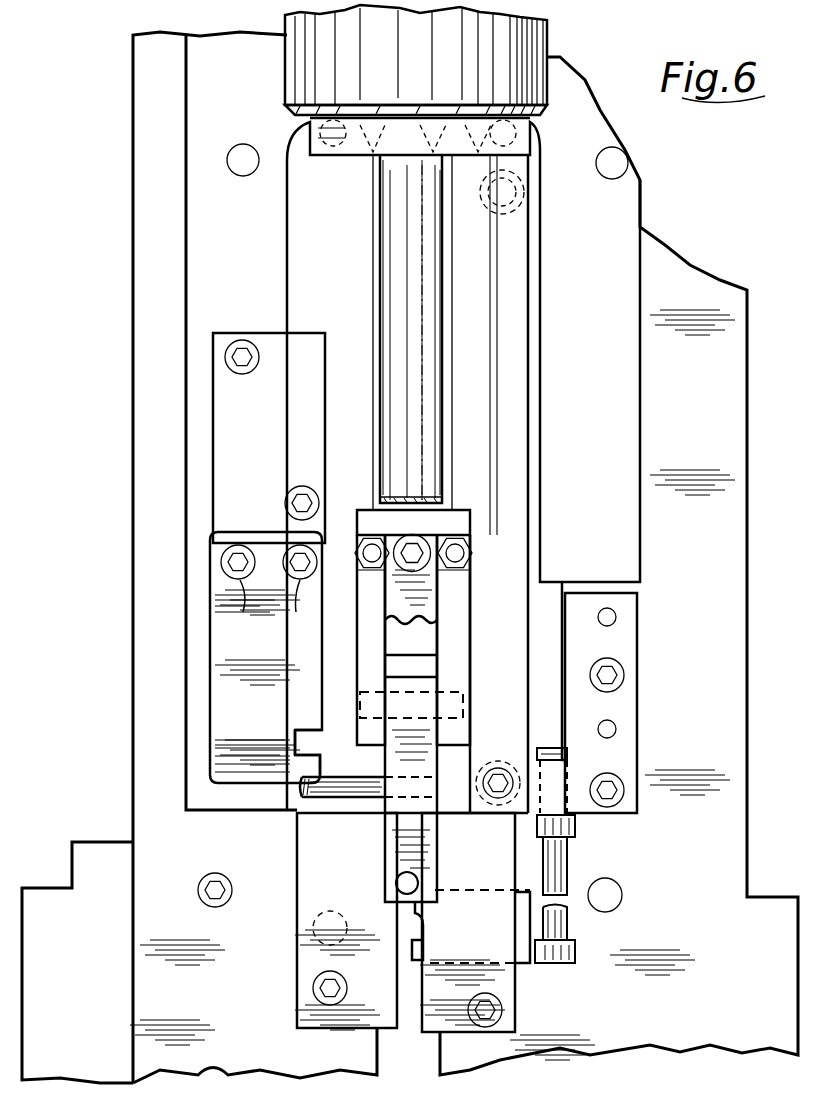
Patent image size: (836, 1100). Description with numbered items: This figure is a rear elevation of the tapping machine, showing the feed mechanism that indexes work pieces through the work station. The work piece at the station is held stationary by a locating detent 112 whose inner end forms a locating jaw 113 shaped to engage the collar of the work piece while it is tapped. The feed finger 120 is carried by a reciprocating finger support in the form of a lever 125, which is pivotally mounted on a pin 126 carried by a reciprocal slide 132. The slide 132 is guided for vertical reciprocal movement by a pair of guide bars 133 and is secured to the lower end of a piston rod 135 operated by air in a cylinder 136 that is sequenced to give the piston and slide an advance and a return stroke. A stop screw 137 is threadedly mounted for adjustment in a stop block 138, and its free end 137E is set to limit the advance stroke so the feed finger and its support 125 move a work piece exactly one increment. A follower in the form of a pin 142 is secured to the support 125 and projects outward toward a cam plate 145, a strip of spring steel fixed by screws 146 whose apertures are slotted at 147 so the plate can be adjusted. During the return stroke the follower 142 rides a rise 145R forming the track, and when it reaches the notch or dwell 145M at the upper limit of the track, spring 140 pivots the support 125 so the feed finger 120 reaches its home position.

The locating detent 112 is at (523, 955).
The locating jaw 113 is at (420, 930).
The feed finger 120 is at (413, 876).
The lever 125 is at (398, 668).
The pin 126 is at (447, 690).
The slide 132 is at (368, 640).
The guide bars 133 is at (505, 480).
The piston rod 135 is at (425, 330).
The cylinder 136 is at (345, 62).
The stop screw 137 is at (557, 858).
The free end 137E is at (567, 752).
The stop block 138 is at (622, 702).
The spring 140 is at (418, 585).
The pin 142 is at (352, 795).
The cam plate 145 is at (240, 767).
The latch plate notch 145M is at (308, 737).
The rise 145R is at (313, 772).
The screws 146 is at (175, 582).
The slotted apertures 147 is at (270, 606).